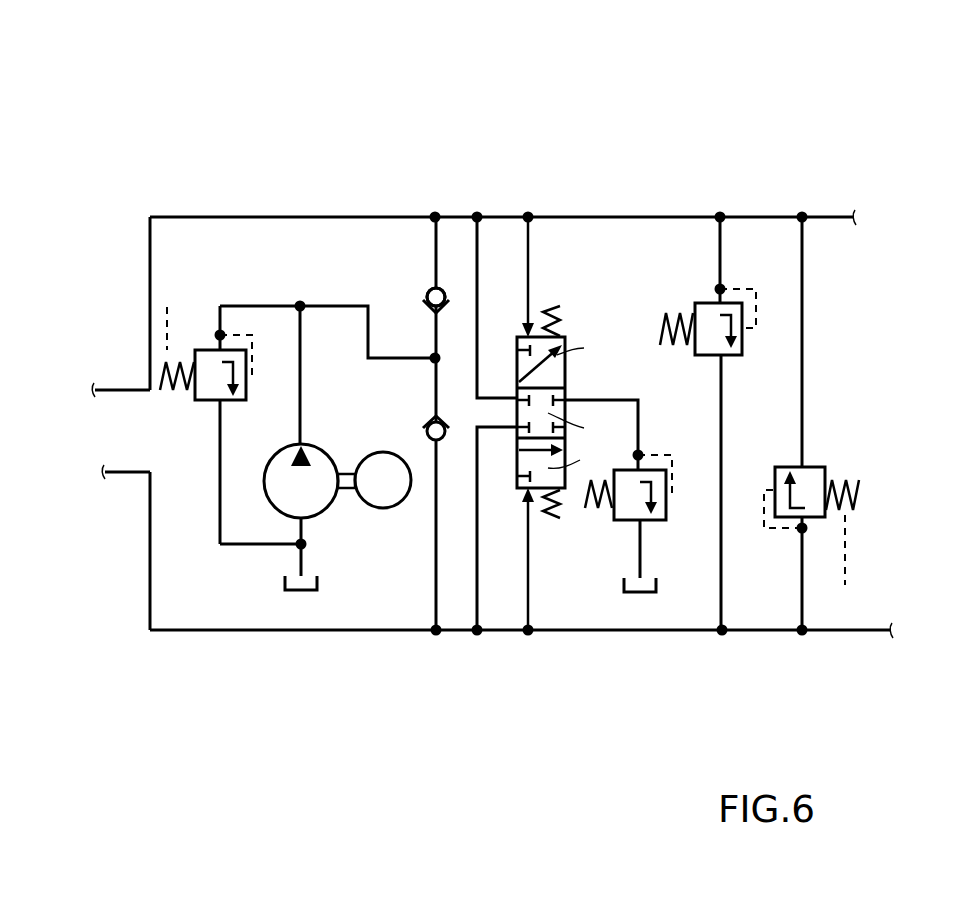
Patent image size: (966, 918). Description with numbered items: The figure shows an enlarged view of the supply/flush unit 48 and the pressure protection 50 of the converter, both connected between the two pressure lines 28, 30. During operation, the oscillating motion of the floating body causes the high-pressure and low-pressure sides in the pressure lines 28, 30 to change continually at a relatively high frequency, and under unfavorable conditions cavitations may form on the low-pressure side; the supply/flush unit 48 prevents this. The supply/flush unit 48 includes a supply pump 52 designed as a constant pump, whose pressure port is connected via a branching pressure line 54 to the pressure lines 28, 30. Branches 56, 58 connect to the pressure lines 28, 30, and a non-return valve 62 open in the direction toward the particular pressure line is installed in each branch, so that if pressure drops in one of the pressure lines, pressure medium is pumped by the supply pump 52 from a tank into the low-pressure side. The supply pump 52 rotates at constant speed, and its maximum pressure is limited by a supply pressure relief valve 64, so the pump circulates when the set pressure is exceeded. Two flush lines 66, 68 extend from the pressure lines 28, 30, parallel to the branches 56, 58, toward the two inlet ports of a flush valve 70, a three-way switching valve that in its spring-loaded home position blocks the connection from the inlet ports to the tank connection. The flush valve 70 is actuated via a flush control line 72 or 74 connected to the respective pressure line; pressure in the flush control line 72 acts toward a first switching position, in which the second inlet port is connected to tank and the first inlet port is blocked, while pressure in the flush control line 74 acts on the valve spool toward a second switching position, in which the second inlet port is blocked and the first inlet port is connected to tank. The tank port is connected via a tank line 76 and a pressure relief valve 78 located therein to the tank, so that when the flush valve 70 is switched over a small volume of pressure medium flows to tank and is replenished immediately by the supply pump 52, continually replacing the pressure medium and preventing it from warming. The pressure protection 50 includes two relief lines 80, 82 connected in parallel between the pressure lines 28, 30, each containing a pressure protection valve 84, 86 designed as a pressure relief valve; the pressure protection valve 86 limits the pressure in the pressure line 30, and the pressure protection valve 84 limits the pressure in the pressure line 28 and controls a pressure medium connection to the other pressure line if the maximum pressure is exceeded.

The pressure line 28 is at (150, 552).
The pressure line 30 is at (150, 270).
The supply/flush unit 48 is at (569, 391).
The pressure protection 50 is at (806, 328).
The supply pump 52 is at (285, 480).
The branching pressure line 54 is at (340, 306).
The branch 56 is at (436, 600).
The branch 58 is at (437, 287).
The non-return valve 62 is at (410, 419).
The supply pressure relief valve 64 is at (208, 370).
The flush line 66 is at (478, 560).
The flush line 68 is at (480, 292).
The flush valve 70 is at (573, 312).
The flush control line 72 is at (532, 572).
The flush control line 74 is at (533, 292).
The tank line 76 is at (641, 416).
The pressure relief valve 78 is at (632, 512).
The relief line 80 is at (803, 305).
The relief line 82 is at (723, 445).
The pressure protection valve 84 is at (808, 478).
The pressure protection valve 86 is at (742, 348).